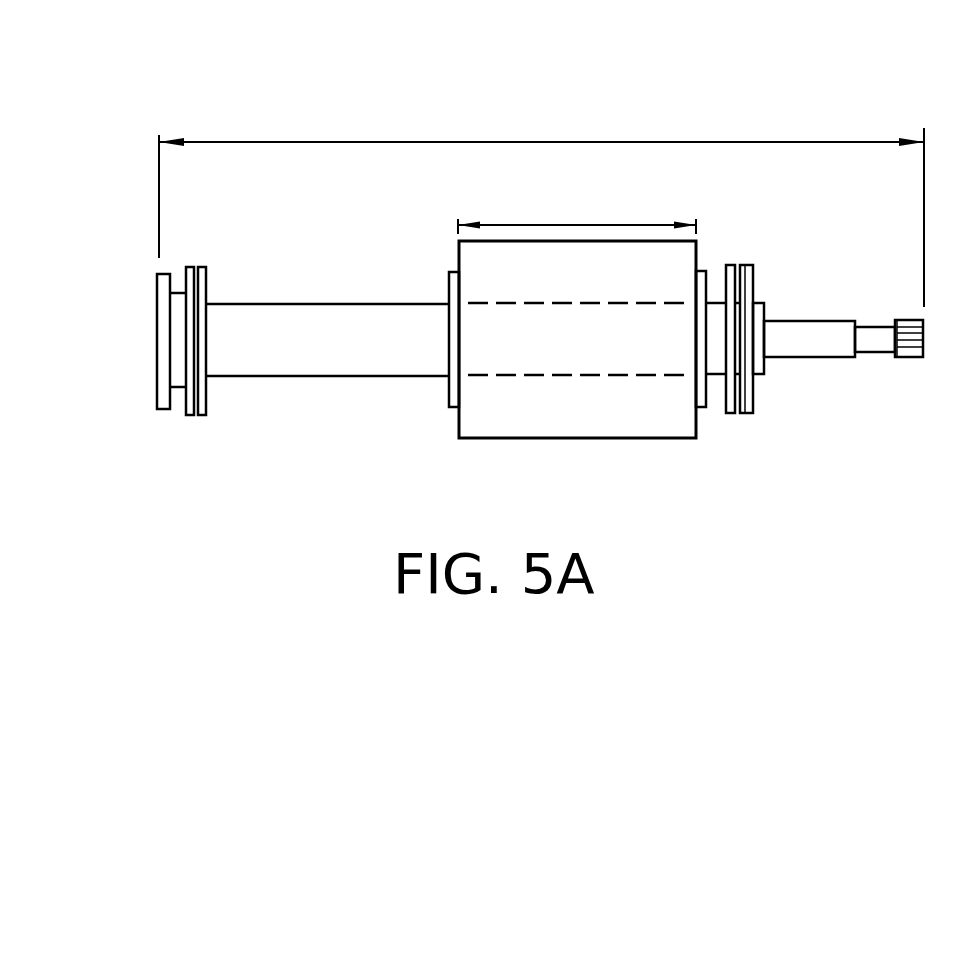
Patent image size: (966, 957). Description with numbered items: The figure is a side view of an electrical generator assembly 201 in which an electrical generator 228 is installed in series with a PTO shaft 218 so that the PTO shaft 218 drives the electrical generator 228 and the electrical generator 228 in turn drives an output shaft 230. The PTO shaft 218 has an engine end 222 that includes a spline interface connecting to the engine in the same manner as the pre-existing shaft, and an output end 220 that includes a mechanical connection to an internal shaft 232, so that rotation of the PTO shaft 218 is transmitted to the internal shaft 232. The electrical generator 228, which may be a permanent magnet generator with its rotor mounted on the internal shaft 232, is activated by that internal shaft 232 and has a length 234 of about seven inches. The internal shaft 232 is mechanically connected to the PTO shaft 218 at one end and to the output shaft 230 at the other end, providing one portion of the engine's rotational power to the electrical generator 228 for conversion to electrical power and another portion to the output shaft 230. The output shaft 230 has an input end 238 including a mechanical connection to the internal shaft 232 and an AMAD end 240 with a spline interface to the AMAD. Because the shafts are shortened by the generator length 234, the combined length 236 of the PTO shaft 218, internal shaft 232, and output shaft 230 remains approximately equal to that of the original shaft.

The electrical generator assembly 201 is at (607, 120).
The PTO shaft 218 is at (350, 378).
The output end 220 is at (450, 396).
The engine end 222 is at (192, 416).
The electrical generator 228 is at (582, 438).
The output shaft 230 is at (717, 306).
The internal shaft 232 is at (613, 376).
The length 234 is at (573, 224).
The combined length 236 is at (415, 140).
The input end 238 is at (703, 405).
The AMAD end 240 is at (748, 262).